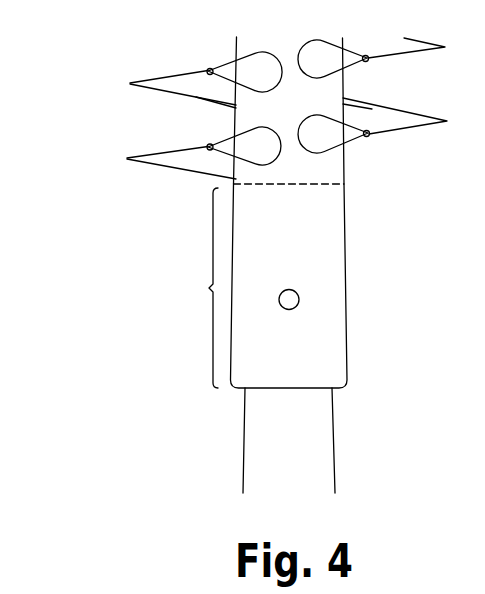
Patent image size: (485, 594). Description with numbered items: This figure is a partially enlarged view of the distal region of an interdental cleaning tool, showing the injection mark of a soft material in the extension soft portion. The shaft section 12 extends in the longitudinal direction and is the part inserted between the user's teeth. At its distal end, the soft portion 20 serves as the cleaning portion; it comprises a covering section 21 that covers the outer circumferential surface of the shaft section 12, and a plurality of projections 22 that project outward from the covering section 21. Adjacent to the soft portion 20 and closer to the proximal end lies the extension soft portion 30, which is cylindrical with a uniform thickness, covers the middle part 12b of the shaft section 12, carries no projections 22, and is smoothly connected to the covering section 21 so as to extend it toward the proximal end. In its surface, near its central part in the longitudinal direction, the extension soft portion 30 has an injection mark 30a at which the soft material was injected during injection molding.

The shaft section 12 is at (337, 452).
The middle part 12b is at (318, 268).
The soft portion 20 is at (344, 165).
The covering section 21 is at (258, 118).
The projections 22 is at (124, 157).
The extension soft portion 30 is at (196, 288).
The injection mark 30a is at (300, 300).